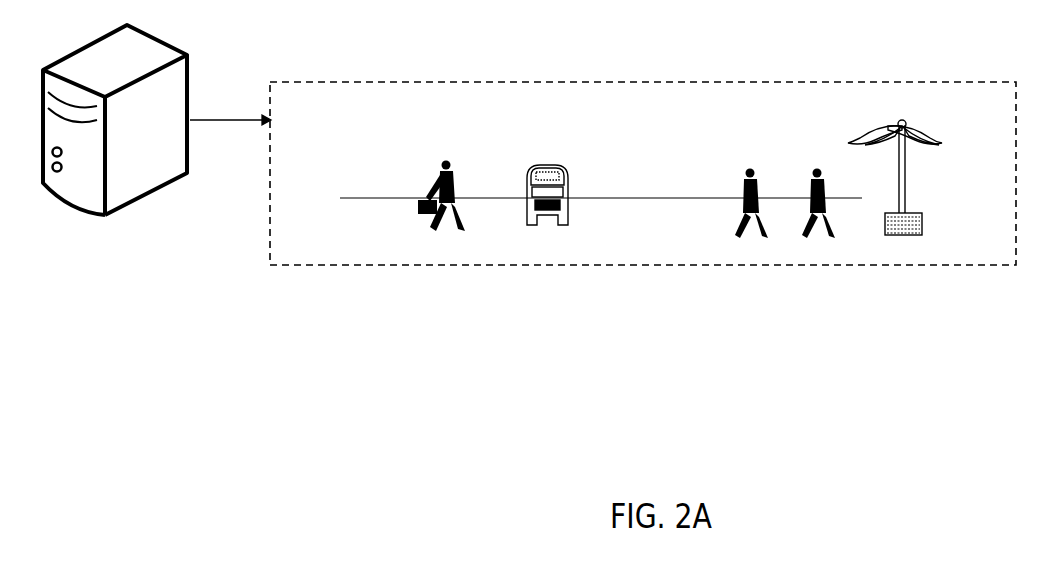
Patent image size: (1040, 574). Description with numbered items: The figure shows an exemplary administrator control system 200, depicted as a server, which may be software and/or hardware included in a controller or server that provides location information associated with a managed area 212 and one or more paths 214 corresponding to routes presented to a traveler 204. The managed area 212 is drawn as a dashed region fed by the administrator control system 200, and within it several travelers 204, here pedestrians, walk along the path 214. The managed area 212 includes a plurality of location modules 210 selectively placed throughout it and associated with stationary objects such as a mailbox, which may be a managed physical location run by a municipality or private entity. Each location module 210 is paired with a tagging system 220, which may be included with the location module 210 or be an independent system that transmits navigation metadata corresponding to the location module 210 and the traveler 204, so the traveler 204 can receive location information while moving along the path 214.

The administrator control system 200 is at (160, 152).
The managed area 212 is at (270, 233).
The path 214 is at (713, 237).
The traveler 204 is at (443, 173).
The location module 210 is at (549, 165).
The tagging system 220 is at (563, 198).